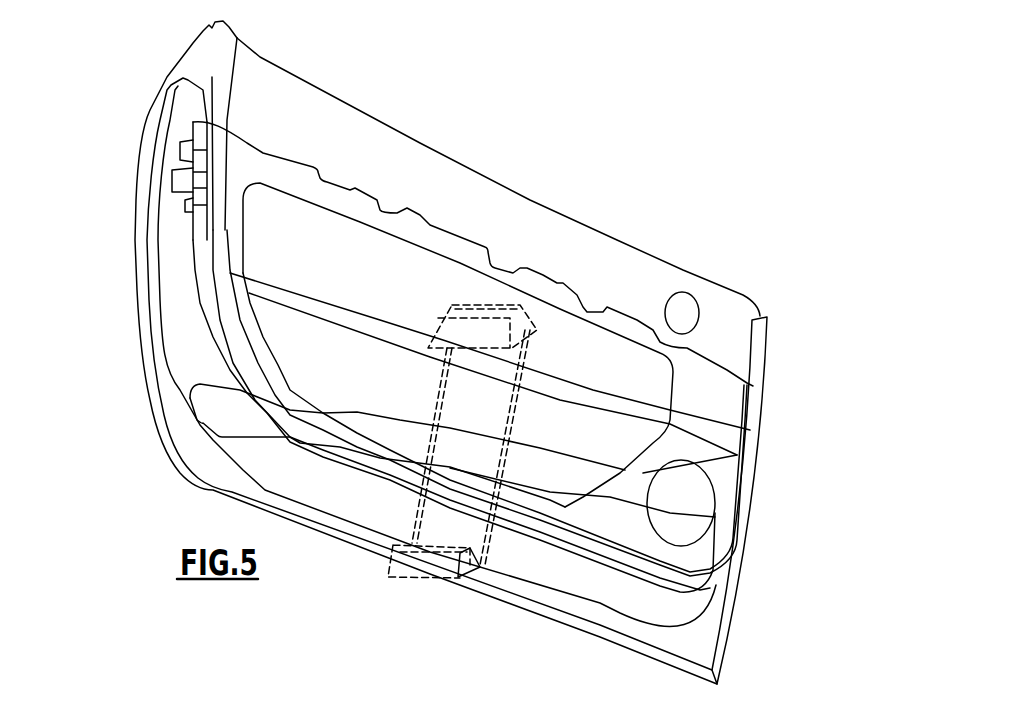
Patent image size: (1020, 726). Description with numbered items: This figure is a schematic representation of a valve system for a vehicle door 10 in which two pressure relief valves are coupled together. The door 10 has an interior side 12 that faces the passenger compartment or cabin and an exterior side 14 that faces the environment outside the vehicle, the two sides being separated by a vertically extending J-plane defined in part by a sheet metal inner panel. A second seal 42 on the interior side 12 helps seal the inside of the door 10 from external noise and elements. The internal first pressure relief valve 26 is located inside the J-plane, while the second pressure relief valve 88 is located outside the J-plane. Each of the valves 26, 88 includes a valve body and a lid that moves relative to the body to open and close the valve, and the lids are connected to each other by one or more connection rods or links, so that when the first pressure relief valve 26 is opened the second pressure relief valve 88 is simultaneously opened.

The door 10 is at (580, 118).
The interior side 12 is at (723, 413).
The exterior side 14 is at (141, 167).
The first pressure relief valve 26 is at (500, 310).
The second seal 42 is at (745, 553).
The second pressure relief valve 88 is at (390, 552).